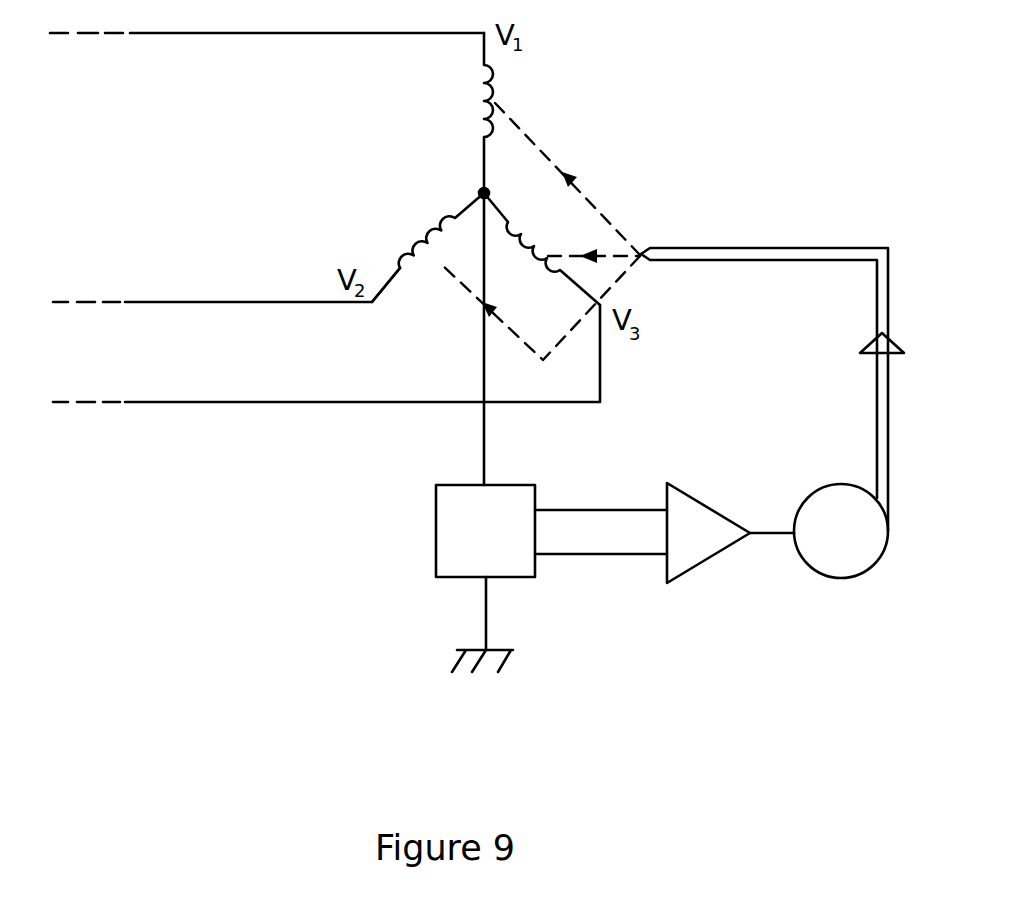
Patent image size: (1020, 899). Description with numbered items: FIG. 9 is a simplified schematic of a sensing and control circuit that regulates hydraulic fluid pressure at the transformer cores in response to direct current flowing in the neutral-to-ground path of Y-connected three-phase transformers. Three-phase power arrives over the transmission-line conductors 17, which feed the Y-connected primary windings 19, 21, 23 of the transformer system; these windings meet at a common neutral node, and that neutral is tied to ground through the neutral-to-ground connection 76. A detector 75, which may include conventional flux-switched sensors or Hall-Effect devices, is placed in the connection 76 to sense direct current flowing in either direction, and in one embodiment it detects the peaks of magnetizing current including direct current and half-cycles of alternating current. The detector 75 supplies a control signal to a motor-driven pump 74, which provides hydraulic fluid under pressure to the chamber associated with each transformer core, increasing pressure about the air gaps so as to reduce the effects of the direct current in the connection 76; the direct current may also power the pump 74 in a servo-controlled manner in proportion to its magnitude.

The transmission-line conductors 17 is at (224, 208).
The primary winding 19 is at (497, 98).
The primary winding 21 is at (542, 265).
The primary winding 23 is at (410, 241).
The motor-driven pump 74 is at (848, 578).
The detector 75 is at (436, 520).
The neutral-to-ground connection 76 is at (486, 437).